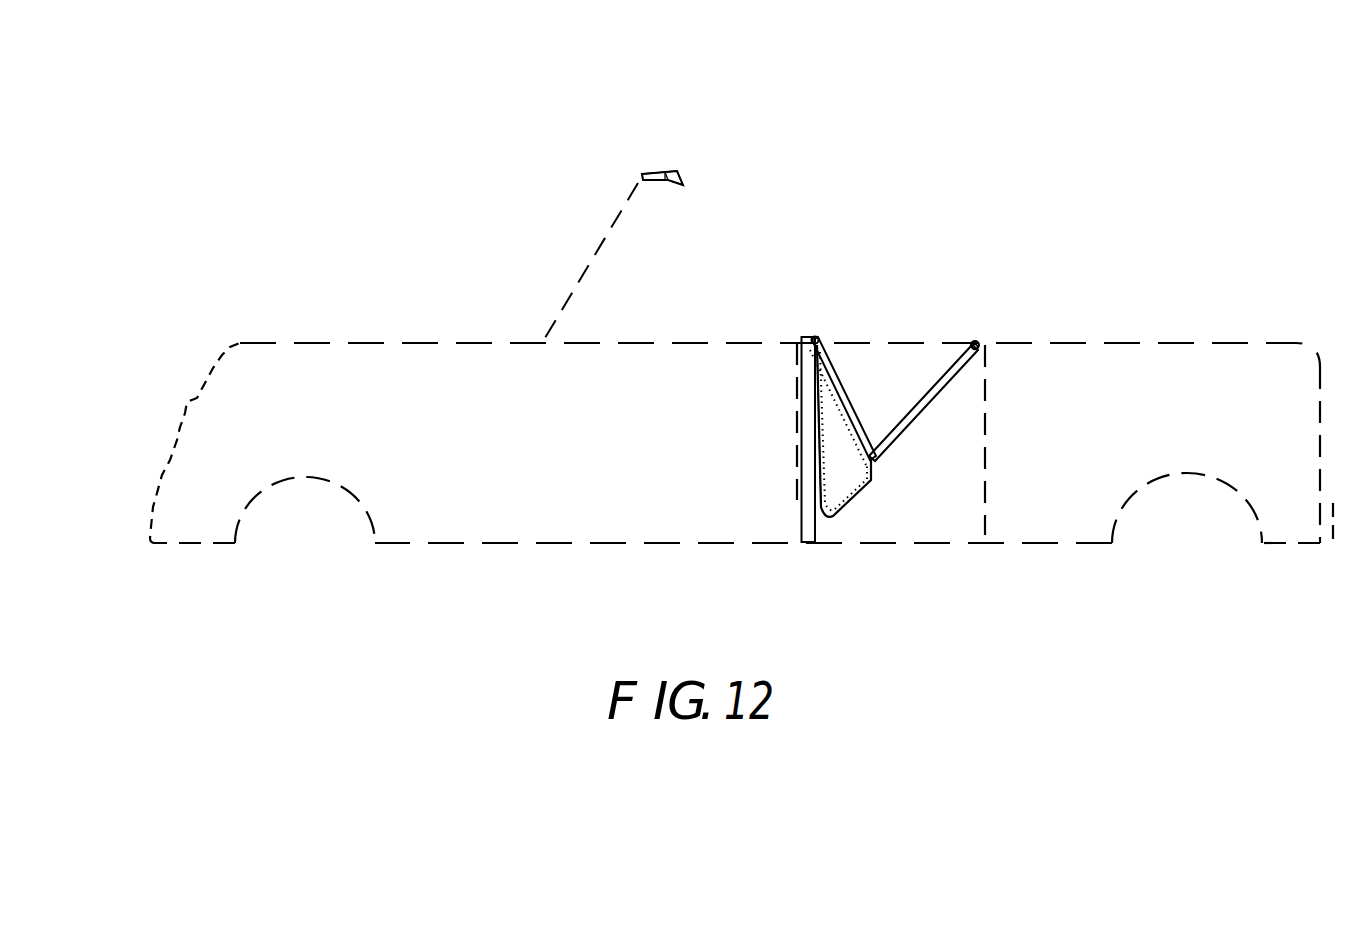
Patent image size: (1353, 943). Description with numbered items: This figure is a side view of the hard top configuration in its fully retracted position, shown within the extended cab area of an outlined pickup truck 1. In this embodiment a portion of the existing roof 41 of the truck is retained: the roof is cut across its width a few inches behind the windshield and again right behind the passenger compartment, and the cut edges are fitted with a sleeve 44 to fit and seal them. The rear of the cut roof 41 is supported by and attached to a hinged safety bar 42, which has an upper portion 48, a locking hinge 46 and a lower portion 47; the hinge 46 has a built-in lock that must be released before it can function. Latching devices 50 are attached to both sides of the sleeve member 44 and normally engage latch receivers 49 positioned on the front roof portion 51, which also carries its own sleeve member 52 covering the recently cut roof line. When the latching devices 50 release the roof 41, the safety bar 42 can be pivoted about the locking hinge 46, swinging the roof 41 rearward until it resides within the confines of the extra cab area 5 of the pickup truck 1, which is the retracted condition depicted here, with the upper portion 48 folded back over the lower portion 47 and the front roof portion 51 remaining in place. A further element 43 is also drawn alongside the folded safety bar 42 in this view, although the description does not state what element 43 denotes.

The pickup truck 1 is at (1240, 352).
The extra cab area 5 is at (950, 504).
The roof 41 is at (927, 410).
The safety bar 42 is at (800, 459).
The airbag 43 is at (850, 503).
The sleeve 44 is at (973, 344).
The locking hinge 46 is at (813, 337).
The lower portion 47 is at (814, 382).
The upper portion 48 is at (843, 384).
The latch receiver 49 is at (662, 187).
The latching device 50 is at (978, 343).
The front roof portion 51 is at (645, 174).
The sleeve member 52 is at (683, 176).